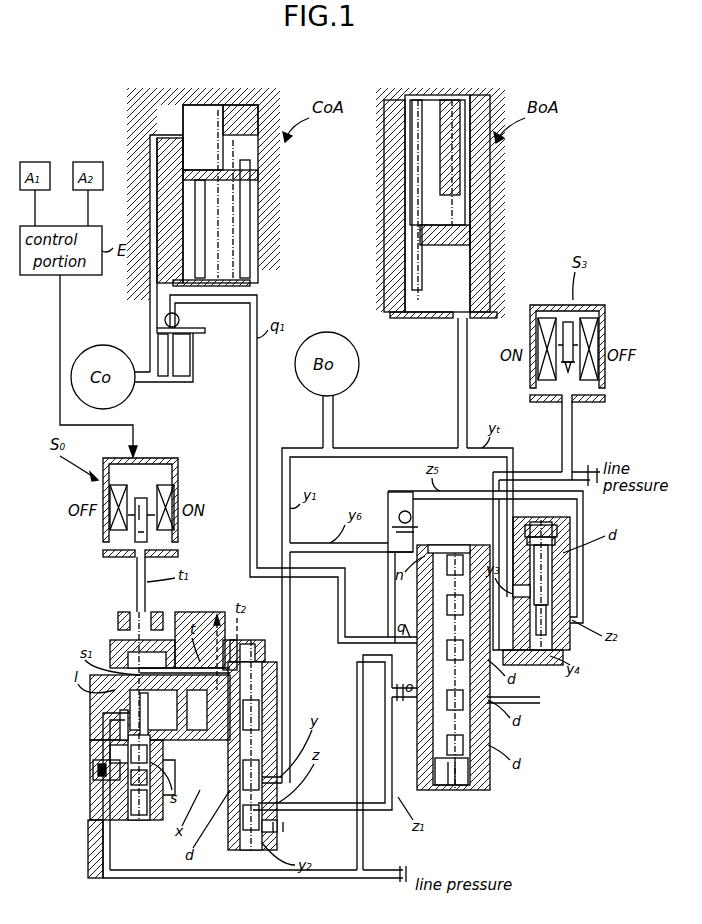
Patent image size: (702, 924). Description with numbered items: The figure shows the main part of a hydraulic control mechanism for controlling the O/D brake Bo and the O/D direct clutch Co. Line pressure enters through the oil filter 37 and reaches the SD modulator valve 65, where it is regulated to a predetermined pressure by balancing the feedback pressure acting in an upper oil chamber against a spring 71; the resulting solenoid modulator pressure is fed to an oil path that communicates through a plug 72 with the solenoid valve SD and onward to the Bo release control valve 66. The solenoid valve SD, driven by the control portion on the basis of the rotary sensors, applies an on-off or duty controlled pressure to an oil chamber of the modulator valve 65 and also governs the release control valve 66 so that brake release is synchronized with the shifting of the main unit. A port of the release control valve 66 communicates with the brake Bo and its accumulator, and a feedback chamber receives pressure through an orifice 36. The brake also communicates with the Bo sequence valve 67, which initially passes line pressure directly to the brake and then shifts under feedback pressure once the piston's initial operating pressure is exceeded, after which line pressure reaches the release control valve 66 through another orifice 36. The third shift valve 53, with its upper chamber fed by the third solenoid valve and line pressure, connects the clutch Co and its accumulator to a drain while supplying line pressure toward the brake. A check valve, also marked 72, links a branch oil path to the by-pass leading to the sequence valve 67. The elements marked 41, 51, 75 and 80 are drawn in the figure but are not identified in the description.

The orifice 36 is at (205, 330).
The oil filter 37 is at (93, 768).
The spring force direction 41 is at (210, 651).
The drain port 51 is at (540, 700).
The third shift valve 53 is at (454, 543).
The SD modulator valve 65 is at (85, 630).
The Bo release control valve 66 is at (262, 635).
The Bo sequence valve 67 is at (583, 531).
The spring 71 is at (128, 808).
The plug 72 is at (400, 510).
The solenoid valve 75 is at (165, 323).
The spool 80 is at (552, 563).